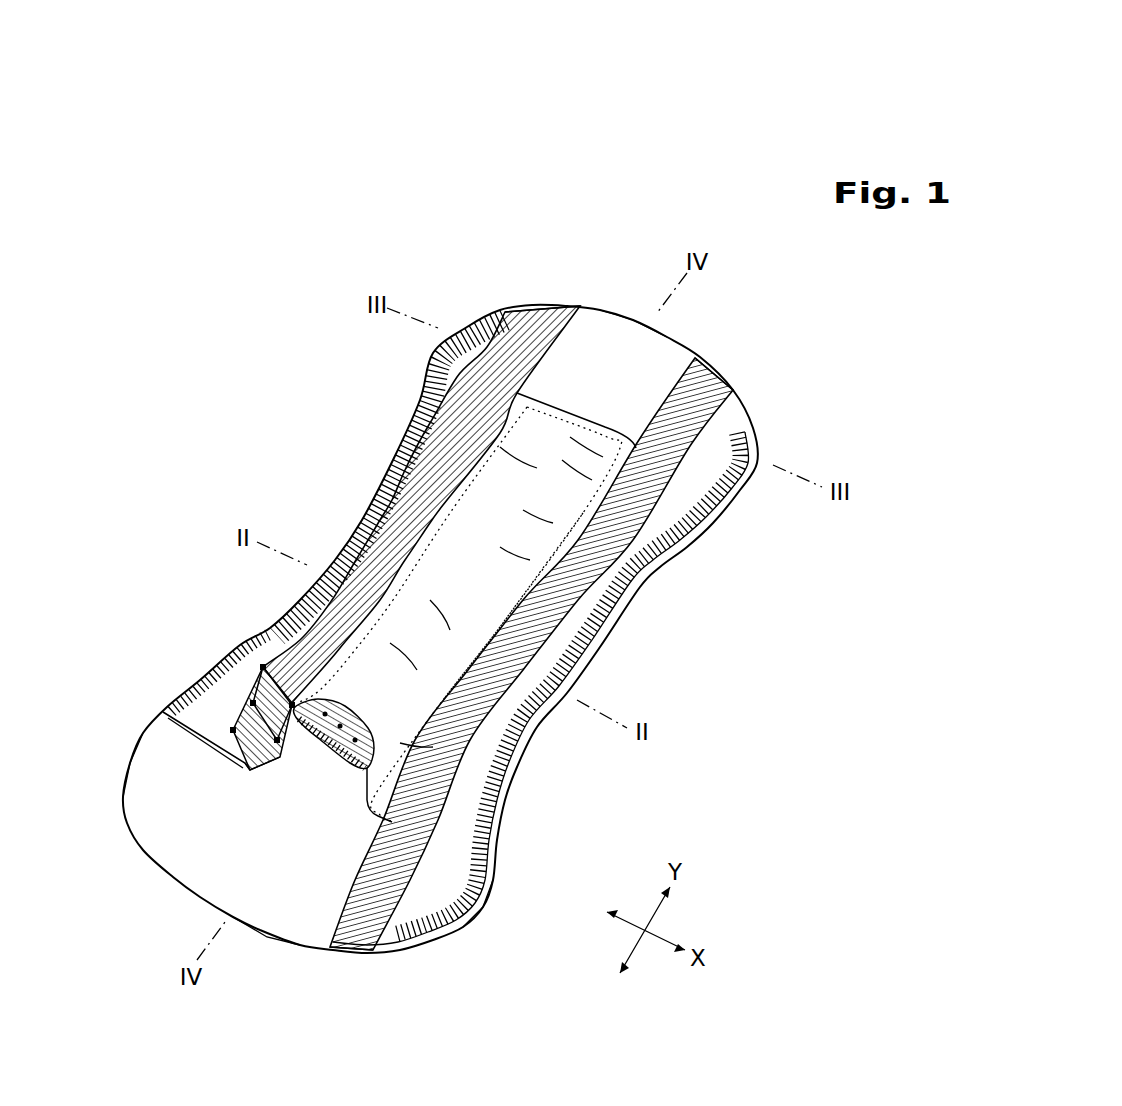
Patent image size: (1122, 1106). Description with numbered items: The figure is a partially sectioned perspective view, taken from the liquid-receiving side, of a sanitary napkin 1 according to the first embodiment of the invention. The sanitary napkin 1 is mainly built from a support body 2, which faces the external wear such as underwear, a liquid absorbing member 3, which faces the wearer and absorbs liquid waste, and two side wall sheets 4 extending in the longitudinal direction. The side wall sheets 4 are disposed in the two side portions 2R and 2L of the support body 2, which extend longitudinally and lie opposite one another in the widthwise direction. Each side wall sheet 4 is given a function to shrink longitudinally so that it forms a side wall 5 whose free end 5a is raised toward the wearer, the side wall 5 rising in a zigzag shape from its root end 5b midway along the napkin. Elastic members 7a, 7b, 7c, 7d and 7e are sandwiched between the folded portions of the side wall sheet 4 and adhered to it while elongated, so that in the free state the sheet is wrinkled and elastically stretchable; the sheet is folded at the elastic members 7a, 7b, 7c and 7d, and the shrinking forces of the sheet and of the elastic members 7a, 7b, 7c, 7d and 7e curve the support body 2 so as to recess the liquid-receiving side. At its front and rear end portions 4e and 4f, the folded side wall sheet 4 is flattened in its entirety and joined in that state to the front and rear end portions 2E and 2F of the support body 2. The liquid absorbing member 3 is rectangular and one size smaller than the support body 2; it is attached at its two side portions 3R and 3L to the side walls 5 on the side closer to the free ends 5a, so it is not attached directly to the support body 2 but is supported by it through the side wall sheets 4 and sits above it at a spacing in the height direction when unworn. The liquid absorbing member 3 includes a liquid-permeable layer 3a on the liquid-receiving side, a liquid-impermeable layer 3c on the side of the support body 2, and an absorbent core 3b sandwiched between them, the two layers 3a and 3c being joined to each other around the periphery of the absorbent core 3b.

The sanitary napkin 1 is at (790, 330).
The support body 2 is at (203, 870).
The front end portion of the support body 2E is at (618, 312).
The rear end portion of the support body 2F is at (268, 935).
The side portion of the support body 2L is at (150, 786).
The side portion of the support body 2R is at (474, 913).
The liquid absorbing member 3 is at (470, 757).
The side portion of the liquid absorbing member 3L is at (330, 680).
The side portion of the liquid absorbing member 3R is at (456, 700).
The liquid-permeable layer 3a is at (355, 712).
The absorbent core 3b is at (362, 772).
The liquid-impermeable layer 3c is at (318, 721).
The side wall sheet 4 is at (367, 513).
The end portion of the side wall sheet 4e is at (548, 308).
The end portion of the side wall sheet 4f is at (371, 933).
The side wall 5 is at (415, 468).
The free end of the side wall 5a is at (295, 632).
The root end of the side wall 5b is at (255, 772).
The elastic member 7a is at (170, 710).
The elastic member 7b is at (233, 729).
The elastic member 7c is at (252, 702).
The elastic member 7d is at (261, 687).
The elastic member 7e is at (263, 667).